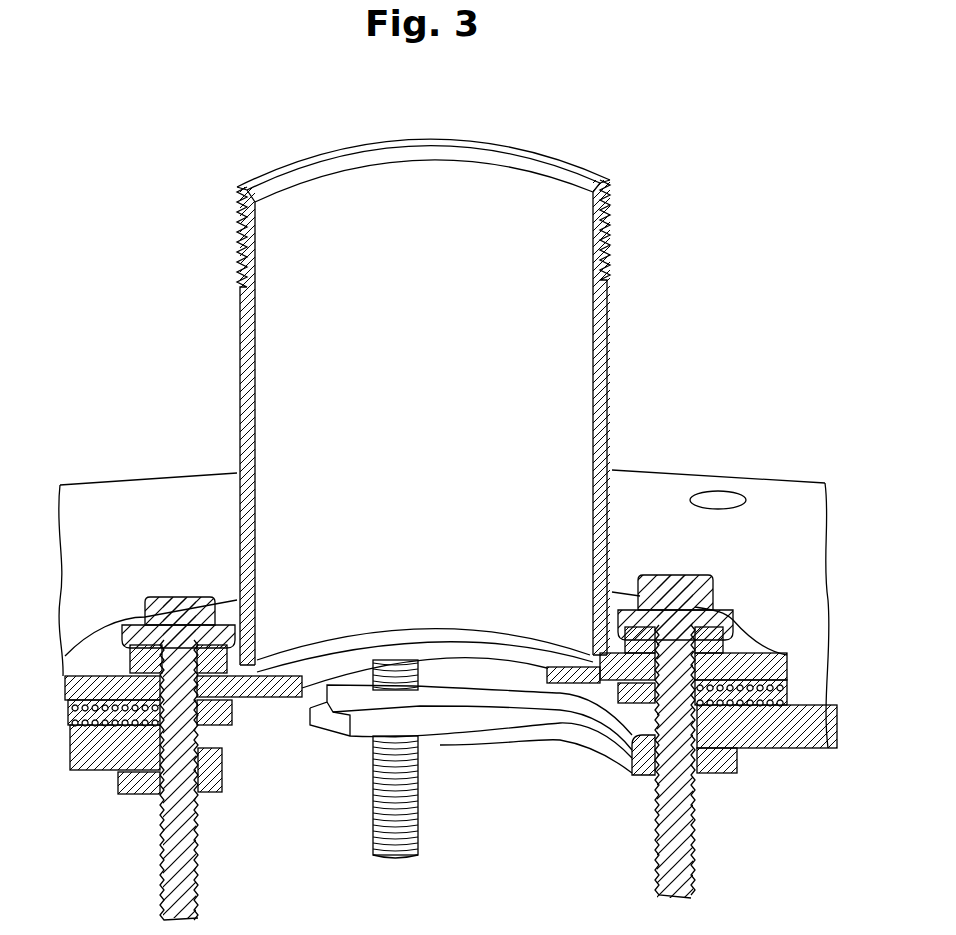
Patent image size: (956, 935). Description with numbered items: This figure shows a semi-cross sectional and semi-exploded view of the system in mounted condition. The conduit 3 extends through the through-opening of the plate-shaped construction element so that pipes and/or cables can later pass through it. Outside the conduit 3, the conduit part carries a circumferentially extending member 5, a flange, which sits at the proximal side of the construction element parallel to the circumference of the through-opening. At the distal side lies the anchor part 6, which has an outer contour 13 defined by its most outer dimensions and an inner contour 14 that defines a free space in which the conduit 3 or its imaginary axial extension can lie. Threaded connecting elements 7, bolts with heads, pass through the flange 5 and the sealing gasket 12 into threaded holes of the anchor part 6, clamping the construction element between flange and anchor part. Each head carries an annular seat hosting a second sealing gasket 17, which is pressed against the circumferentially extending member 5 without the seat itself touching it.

The conduit 3 is at (607, 312).
The circumferentially extending member 5 is at (787, 655).
The anchor part 6 is at (641, 776).
The connecting element 7 is at (678, 620).
The sealing gasket 12 is at (760, 707).
The outer contour 13 is at (113, 782).
The inner contour 14 is at (542, 730).
The second sealing gasket 17 is at (733, 620).